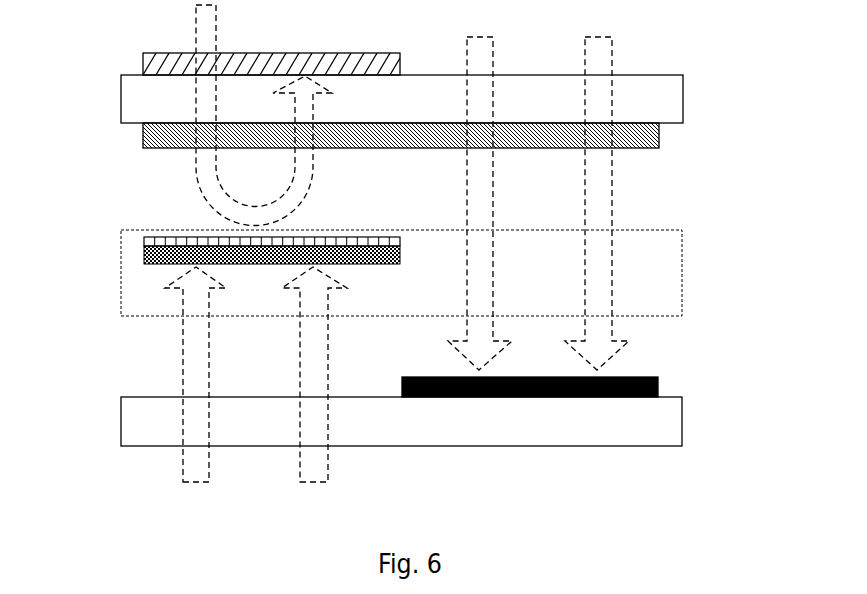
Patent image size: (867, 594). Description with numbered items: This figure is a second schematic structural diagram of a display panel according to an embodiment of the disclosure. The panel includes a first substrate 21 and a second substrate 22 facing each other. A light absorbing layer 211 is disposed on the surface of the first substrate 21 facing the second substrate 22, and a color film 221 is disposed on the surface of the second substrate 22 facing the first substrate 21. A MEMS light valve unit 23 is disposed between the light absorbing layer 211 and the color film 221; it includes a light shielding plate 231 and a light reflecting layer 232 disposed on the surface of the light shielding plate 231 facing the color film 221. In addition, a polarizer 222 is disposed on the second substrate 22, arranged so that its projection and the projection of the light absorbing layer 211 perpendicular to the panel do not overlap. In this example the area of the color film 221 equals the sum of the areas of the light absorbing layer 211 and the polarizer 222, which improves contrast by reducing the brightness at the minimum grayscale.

The first substrate 21 is at (682, 420).
The light absorbing layer 211 is at (658, 387).
The second substrate 22 is at (683, 99).
The color film 221 is at (659, 137).
The polarizer 222 is at (143, 66).
The MEMS light valve unit 23 is at (682, 273).
The light shielding plate 231 is at (155, 264).
The light reflecting layer 232 is at (144, 241).